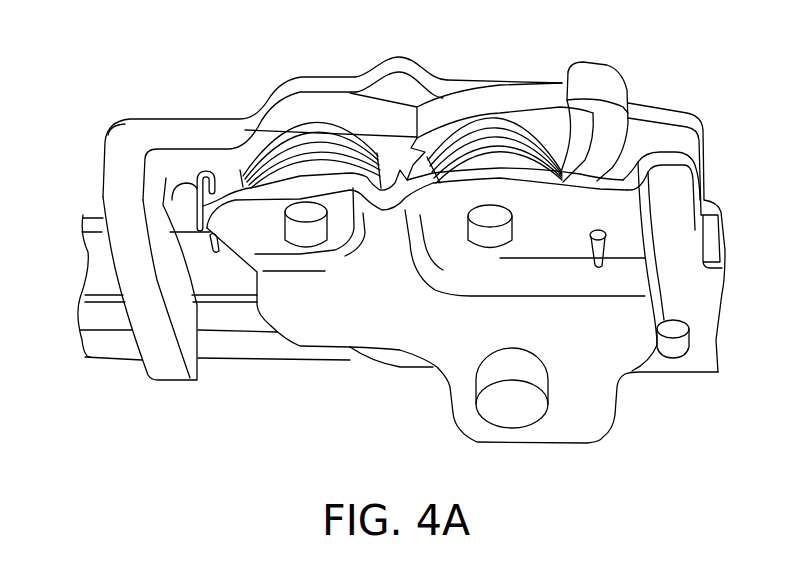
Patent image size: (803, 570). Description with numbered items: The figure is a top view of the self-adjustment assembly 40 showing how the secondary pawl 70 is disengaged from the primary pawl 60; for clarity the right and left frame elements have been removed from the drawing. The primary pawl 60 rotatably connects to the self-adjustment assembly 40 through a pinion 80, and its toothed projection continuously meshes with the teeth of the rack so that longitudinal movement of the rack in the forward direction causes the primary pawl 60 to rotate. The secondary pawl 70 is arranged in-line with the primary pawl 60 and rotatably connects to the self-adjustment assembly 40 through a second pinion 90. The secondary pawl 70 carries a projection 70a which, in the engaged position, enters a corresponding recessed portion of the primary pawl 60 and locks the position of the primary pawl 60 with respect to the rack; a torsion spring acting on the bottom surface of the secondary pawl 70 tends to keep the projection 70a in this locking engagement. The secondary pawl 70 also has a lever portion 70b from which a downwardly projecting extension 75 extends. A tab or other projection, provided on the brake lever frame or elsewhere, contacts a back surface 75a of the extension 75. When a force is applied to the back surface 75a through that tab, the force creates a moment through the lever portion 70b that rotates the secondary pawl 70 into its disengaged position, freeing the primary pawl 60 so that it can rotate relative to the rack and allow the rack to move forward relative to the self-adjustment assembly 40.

The self-adjustment assembly 40 is at (652, 86).
The primary pawl 60 is at (496, 100).
The secondary pawl 70 is at (332, 106).
The projection 70a is at (395, 117).
The lever portion 70b is at (175, 130).
The downwardly projecting extension 75 is at (165, 367).
The back surface 75a is at (140, 365).
The pinion 80 is at (490, 245).
The pinion 90 is at (310, 240).